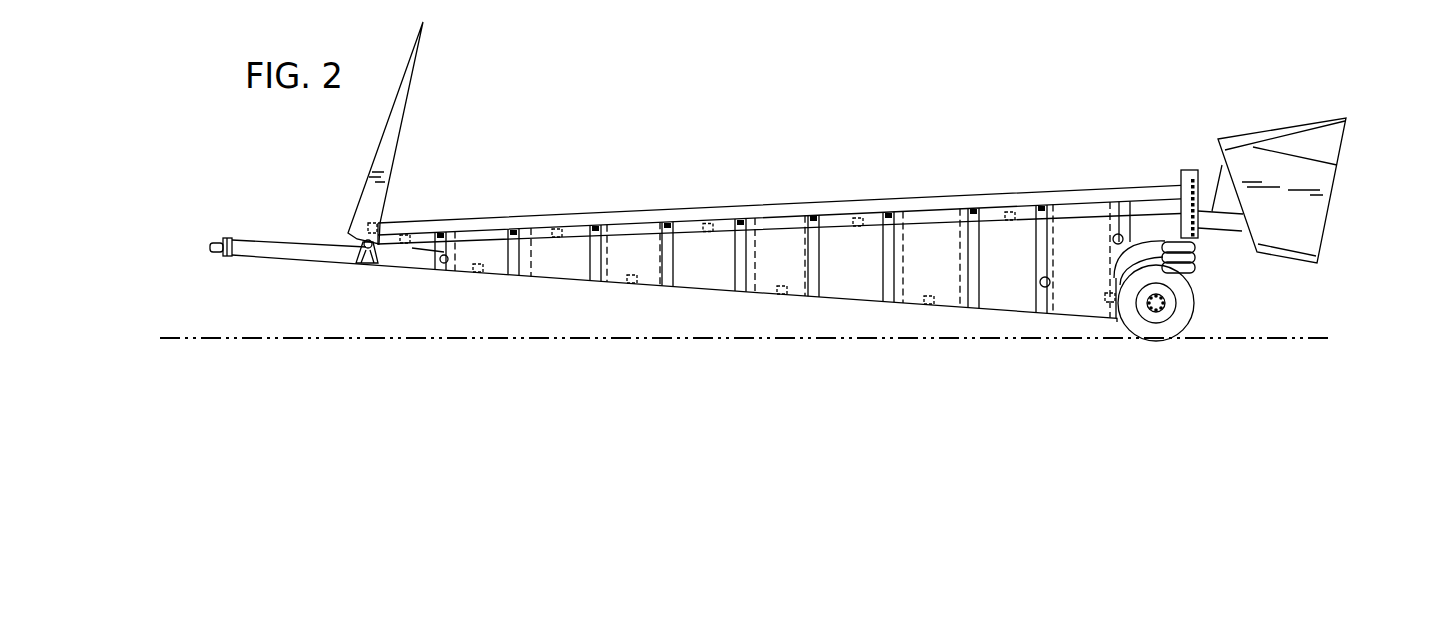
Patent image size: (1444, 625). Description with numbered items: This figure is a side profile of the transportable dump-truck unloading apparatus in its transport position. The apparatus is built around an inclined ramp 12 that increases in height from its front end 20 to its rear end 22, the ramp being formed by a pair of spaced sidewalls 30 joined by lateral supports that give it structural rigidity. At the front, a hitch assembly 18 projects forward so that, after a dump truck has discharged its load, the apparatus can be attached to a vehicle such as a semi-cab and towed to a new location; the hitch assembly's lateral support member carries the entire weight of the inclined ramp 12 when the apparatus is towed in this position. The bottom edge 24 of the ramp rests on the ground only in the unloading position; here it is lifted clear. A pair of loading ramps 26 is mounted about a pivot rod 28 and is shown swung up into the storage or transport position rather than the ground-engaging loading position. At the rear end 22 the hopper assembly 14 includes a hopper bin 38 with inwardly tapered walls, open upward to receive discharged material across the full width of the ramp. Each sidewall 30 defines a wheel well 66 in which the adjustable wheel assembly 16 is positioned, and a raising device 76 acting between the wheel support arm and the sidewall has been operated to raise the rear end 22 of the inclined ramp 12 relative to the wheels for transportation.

The inclined ramp 12 is at (892, 312).
The hopper assembly 14 is at (1348, 187).
The adjustable wheel assembly 16 is at (1207, 311).
The hitch assembly 18 is at (262, 246).
The front end 20 is at (420, 250).
The rear end 22 is at (1100, 240).
The bottom edge 24 is at (550, 280).
The loading ramps 26 is at (405, 110).
The pivot rod 28 is at (368, 252).
The sidewalls 30 is at (703, 275).
The hopper bin 38 is at (1313, 232).
The wheel well 66 is at (1152, 238).
The raising device 76 is at (1200, 255).